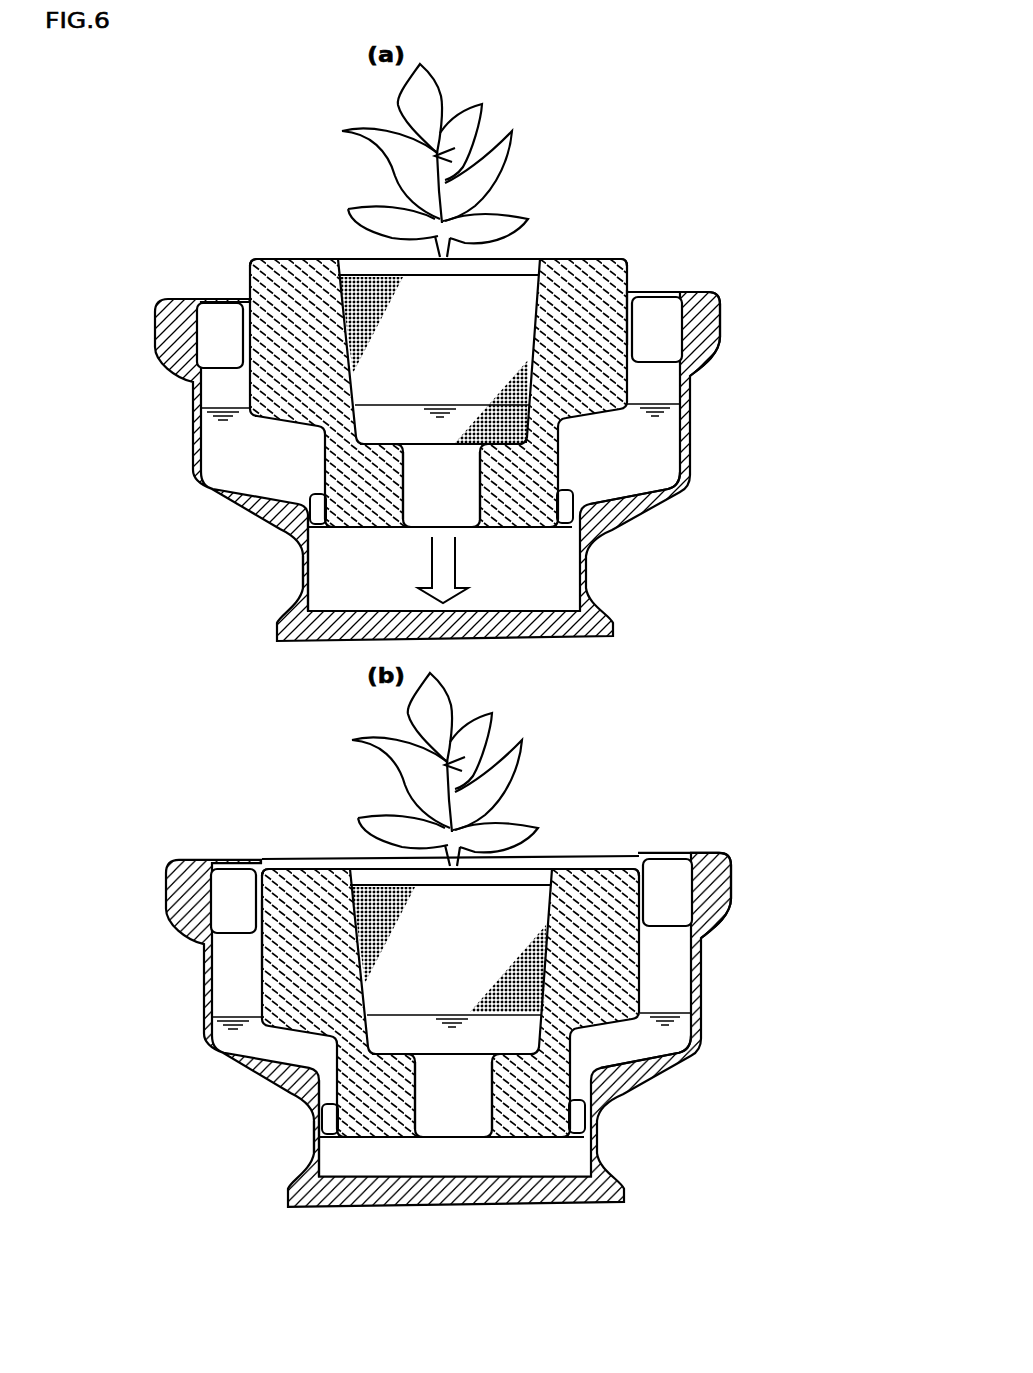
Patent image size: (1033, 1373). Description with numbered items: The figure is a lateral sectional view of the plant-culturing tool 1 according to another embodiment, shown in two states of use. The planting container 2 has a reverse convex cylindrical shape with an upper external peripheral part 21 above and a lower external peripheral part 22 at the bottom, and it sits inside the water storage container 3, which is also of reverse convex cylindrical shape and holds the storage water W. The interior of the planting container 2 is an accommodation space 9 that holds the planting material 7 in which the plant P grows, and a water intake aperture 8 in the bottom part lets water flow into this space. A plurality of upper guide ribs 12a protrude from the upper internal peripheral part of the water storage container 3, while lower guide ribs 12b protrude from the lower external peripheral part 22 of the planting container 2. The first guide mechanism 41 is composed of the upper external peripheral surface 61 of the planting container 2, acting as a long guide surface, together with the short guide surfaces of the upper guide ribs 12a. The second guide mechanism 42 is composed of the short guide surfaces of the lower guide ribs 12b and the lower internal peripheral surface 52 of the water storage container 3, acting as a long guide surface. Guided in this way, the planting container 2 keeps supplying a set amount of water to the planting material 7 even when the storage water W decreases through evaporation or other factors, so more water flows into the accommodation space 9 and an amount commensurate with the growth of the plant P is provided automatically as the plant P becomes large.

The plant-culturing tool 1 is at (201, 180).
The planting container 2 is at (158, 492).
The water storage container 3 is at (165, 349).
The upper external peripheral part 21 is at (278, 407).
The lower external peripheral part 22 is at (318, 508).
The upper guide ribs 12a is at (221, 312).
The lower guide ribs 12b is at (318, 503).
The planting material 7 is at (350, 260).
The water intake aperture 8 is at (474, 520).
The accommodation space 9 is at (532, 257).
The upper external peripheral surface 61 is at (642, 317).
The first guide mechanism 41 is at (658, 341).
The second guide mechanism 42 is at (595, 494).
The lower internal peripheral surface 52 is at (318, 565).
The storage water W is at (418, 404).
The plant P is at (482, 128).